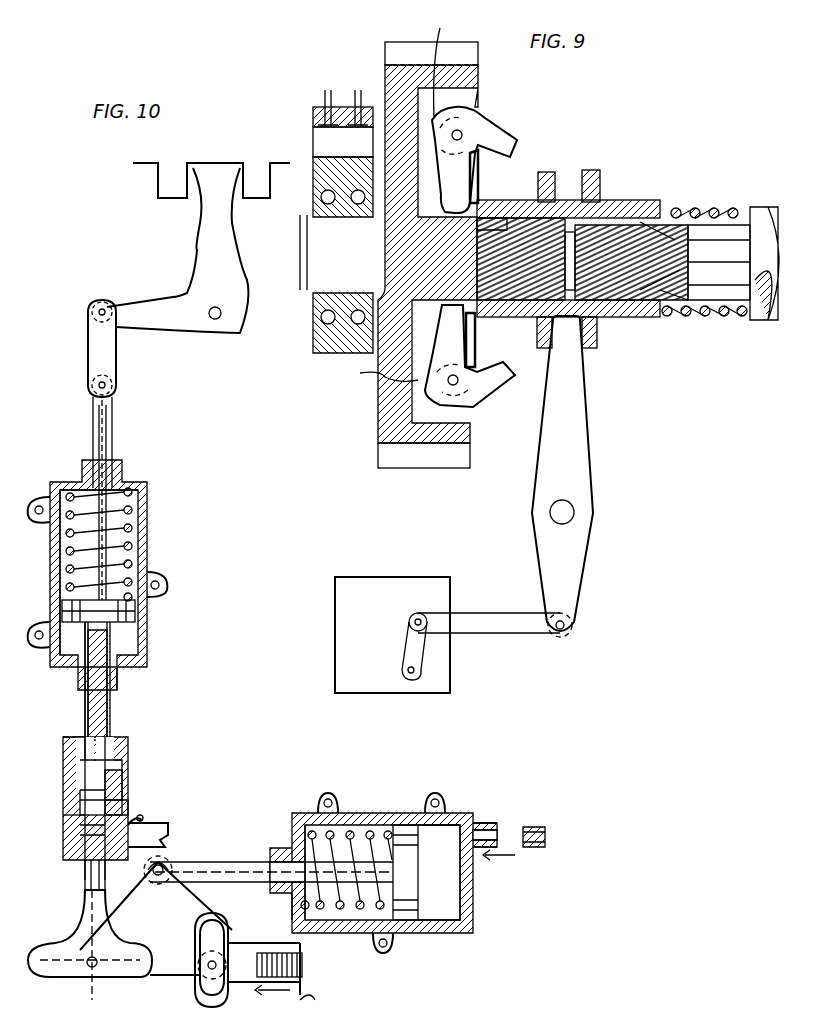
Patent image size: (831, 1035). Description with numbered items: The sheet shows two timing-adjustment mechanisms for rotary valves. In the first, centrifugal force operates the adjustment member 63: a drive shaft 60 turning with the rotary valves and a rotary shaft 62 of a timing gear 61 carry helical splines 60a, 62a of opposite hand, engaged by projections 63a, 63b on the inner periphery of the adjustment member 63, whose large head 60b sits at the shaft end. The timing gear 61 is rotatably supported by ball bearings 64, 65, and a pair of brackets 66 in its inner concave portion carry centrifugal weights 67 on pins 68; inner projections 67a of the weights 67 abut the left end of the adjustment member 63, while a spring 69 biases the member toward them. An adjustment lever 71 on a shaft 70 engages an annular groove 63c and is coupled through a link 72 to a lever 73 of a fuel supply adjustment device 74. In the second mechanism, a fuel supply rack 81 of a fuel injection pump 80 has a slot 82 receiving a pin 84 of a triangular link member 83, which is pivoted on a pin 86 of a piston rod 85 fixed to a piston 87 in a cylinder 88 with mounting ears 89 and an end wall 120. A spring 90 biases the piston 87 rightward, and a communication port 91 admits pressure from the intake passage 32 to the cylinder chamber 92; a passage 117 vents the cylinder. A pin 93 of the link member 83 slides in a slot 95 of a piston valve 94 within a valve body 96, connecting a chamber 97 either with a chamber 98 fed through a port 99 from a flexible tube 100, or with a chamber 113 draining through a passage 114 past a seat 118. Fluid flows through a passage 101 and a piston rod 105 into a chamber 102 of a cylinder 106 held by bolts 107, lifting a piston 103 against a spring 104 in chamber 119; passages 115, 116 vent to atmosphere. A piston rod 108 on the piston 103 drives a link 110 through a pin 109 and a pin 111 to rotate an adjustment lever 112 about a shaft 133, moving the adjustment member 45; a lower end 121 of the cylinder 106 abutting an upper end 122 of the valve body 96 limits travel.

In FIG. 9, the drive shaft 60 is at (733, 239).
In FIG. 9, the helical spline 60a is at (680, 312).
In FIG. 9, the shaft head 60b is at (762, 212).
In FIG. 9, the timing gear 61 is at (390, 53).
In FIG. 9, the rotary shaft 62 is at (538, 185).
In FIG. 9, the helical spline 62a is at (515, 288).
In FIG. 9, the adjustment member 63 is at (628, 210).
In FIG. 9, the projection 63a is at (505, 215).
In FIG. 9, the projection 63b is at (660, 215).
In FIG. 9, the annular groove 63c is at (592, 175).
In FIG. 9, the ball bearing 64 is at (360, 215).
In FIG. 9, the ball bearing 65 is at (333, 297).
In FIG. 9, the bracket 66 is at (392, 195).
In FIG. 9, the centrifugal weight 67 is at (498, 150).
In FIG. 9, the inner projection 67a is at (516, 150).
In FIG. 9, the pin 68 is at (462, 130).
In FIG. 9, the spring 69 is at (708, 316).
In FIG. 9, the shaft 70 is at (574, 510).
In FIG. 9, the adjustment lever 71 is at (578, 440).
In FIG. 9, the link 72 is at (501, 612).
In FIG. 9, the lever 73 is at (425, 648).
In FIG. 9, the fuel supply adjustment device 74 is at (448, 585).
In FIG. 10, the adjustment member 45 is at (268, 176).
In FIG. 10, the adjustment lever 112 is at (208, 272).
In FIG. 10, the shaft 133 is at (214, 320).
In FIG. 10, the pin 111 is at (98, 307).
In FIG. 10, the link 110 is at (94, 342).
In FIG. 10, the pin 109 is at (96, 388).
In FIG. 10, the piston rod 108 is at (110, 425).
In FIG. 10, the passage 116 is at (143, 492).
In FIG. 10, the cylinder 106 is at (143, 512).
In FIG. 10, the spring 104 is at (125, 528).
In FIG. 10, the chamber 119 is at (132, 556).
In FIG. 10, the bolt 107 is at (38, 522).
In FIG. 10, the piston 103 is at (125, 611).
In FIG. 10, the chamber 102 is at (135, 638).
In FIG. 10, the piston rod 105 is at (86, 690).
In FIG. 10, the lower end 121 is at (115, 683).
In FIG. 10, the upper end 122 is at (118, 737).
In FIG. 10, the valve body 96 is at (128, 748).
In FIG. 10, the passage 101 is at (68, 748).
In FIG. 10, the valve seat 118 is at (80, 770).
In FIG. 10, the passage 115 is at (122, 775).
In FIG. 10, the passage 114 is at (124, 795).
In FIG. 10, the chamber 113 is at (82, 800).
In FIG. 10, the chamber 97 is at (70, 818).
In FIG. 10, the chamber 98 is at (82, 838).
In FIG. 10, the port 99 is at (140, 818).
In FIG. 10, the flexible tube 100 is at (168, 830).
In FIG. 10, the piston valve 94 is at (88, 879).
In FIG. 10, the slot 95 is at (50, 970).
In FIG. 10, the pin 93 is at (92, 967).
In FIG. 10, the link member 83 is at (160, 975).
In FIG. 10, the pin 86 is at (156, 876).
In FIG. 10, the pin 84 is at (198, 943).
In FIG. 10, the slot 82 is at (200, 990).
In FIG. 10, the fuel supply rack 81 is at (300, 965).
In FIG. 10, the fuel injection pump 80 is at (285, 1002).
In FIG. 10, the cylinder 88 is at (393, 812).
In FIG. 10, the mounting ear 89 is at (440, 800).
In FIG. 10, the end wall 120 is at (310, 825).
In FIG. 10, the spring 90 is at (362, 845).
In FIG. 10, the piston 87 is at (410, 862).
In FIG. 10, the piston rod 85 is at (238, 860).
In FIG. 10, the communication port 91 is at (485, 822).
In FIG. 10, the intake passage 32 is at (537, 825).
In FIG. 10, the cylinder chamber 92 is at (460, 890).
In FIG. 10, the passage 117 is at (292, 905).